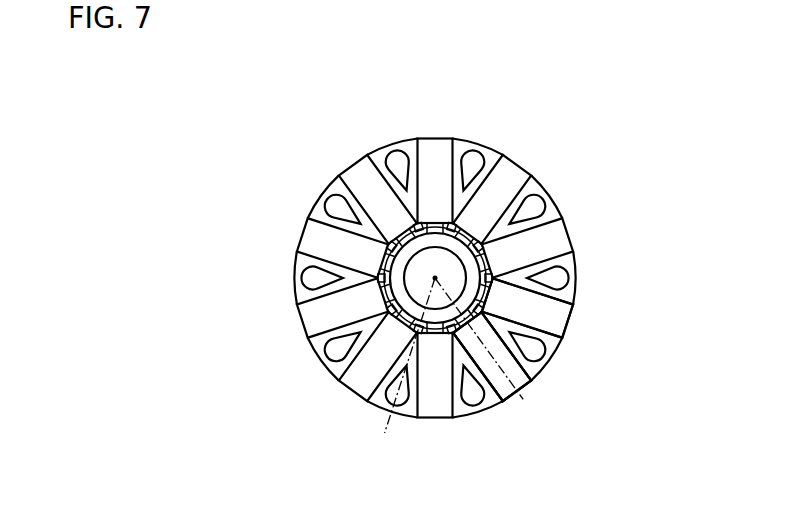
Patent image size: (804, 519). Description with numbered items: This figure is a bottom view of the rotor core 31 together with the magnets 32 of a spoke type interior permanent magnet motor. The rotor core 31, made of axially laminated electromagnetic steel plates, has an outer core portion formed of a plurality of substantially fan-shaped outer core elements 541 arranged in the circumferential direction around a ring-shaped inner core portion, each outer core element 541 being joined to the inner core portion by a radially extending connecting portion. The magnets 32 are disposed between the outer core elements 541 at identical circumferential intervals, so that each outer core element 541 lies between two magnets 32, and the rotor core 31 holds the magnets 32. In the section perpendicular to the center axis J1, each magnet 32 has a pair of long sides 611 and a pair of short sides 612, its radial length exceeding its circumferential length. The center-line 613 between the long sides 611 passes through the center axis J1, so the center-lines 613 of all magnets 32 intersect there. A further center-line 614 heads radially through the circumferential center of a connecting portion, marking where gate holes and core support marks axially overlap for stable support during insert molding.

The rotor core 31 is at (303, 146).
The magnet 32 is at (507, 172).
The outer core element 541 is at (490, 151).
The center axis J1 is at (435, 278).
The long side 611 is at (520, 363).
The short side 612 is at (492, 292).
The center-line 613 is at (525, 395).
The center-line 614 is at (385, 436).